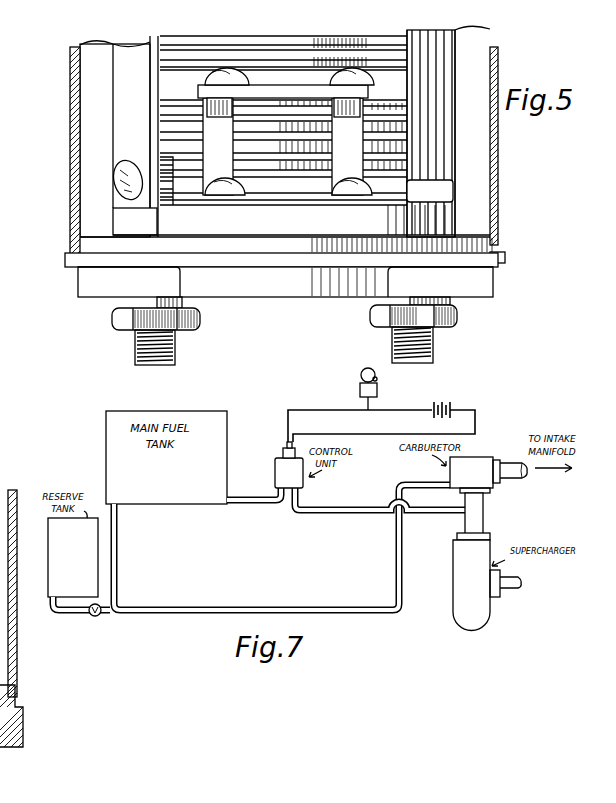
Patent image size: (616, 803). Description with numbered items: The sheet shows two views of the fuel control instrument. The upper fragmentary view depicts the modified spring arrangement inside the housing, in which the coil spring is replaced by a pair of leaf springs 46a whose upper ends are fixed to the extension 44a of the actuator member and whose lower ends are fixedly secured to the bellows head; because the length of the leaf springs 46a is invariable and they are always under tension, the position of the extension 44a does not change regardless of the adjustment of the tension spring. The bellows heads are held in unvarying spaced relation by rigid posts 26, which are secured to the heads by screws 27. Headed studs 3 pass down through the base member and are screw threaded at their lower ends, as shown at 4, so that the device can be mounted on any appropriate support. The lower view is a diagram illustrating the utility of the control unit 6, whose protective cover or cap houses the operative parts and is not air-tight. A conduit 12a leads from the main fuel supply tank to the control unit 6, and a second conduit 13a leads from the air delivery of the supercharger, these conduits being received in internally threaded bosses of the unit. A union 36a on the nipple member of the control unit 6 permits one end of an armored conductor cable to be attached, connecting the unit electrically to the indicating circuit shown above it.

In FIG. 5, the extension 44a is at (330, 70).
In FIG. 5, the rigid post 26 is at (122, 140).
In FIG. 5, the screw 27 is at (445, 182).
In FIG. 5, the leaf spring 46a is at (347, 165).
In FIG. 5, the screw threaded lower end 4 is at (137, 350).
In FIG. 7, the headed stud 3 is at (11, 601).
In FIG. 7, the union 36a is at (288, 445).
In FIG. 7, the protective cover or cap 6 is at (275, 471).
In FIG. 7, the conduit 12a is at (277, 501).
In FIG. 7, the conduit 13a is at (298, 507).